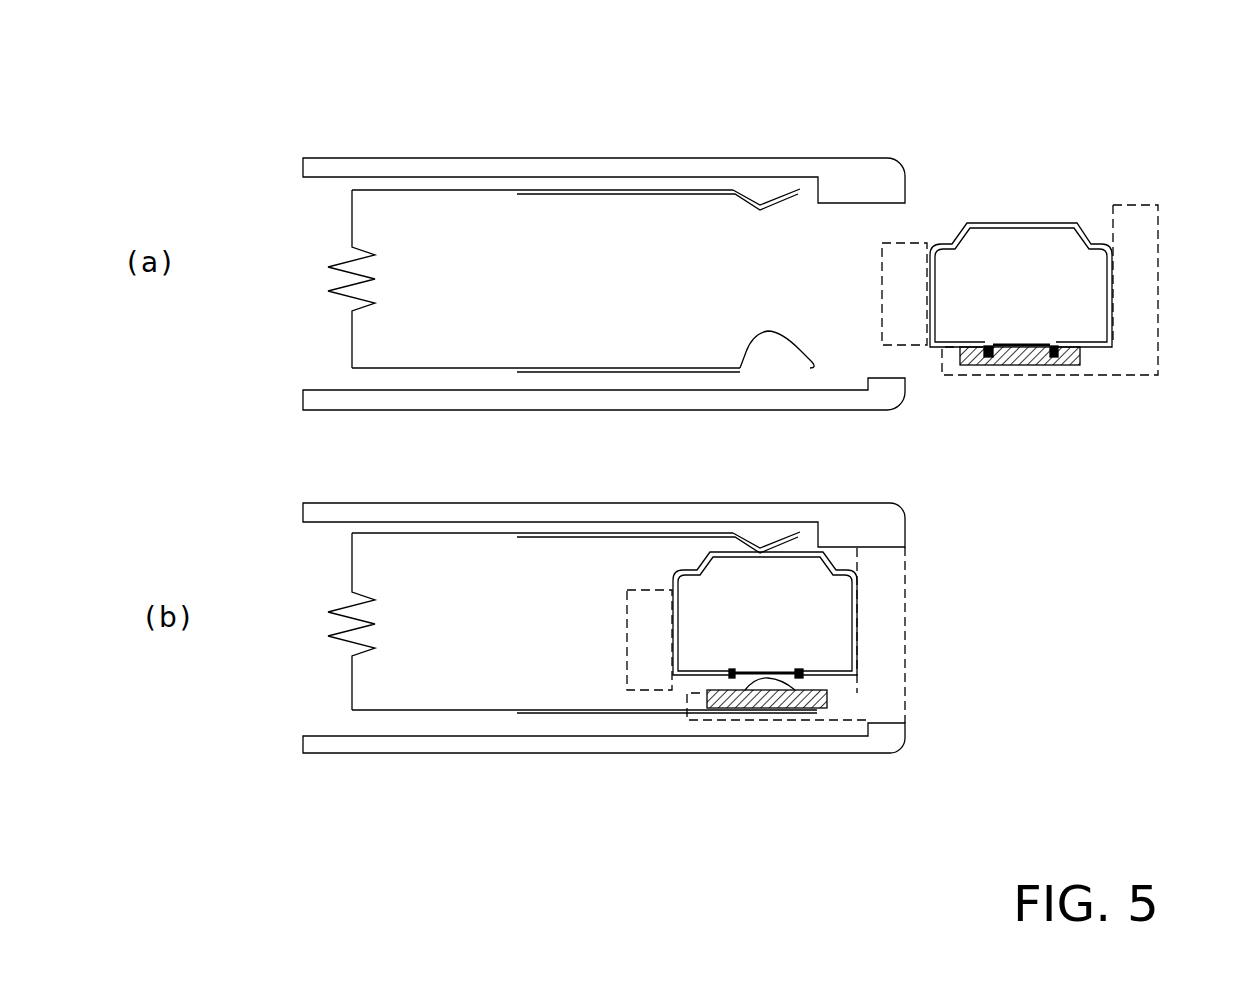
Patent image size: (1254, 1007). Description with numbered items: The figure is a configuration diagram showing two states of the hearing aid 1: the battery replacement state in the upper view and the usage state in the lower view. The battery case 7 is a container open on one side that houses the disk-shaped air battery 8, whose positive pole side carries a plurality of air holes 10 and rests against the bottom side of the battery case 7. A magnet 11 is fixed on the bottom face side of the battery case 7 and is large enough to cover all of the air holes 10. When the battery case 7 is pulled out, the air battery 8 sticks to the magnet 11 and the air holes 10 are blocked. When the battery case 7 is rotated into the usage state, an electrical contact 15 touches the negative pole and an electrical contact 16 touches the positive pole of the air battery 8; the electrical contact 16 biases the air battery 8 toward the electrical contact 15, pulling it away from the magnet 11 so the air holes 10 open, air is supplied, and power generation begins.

The hearing aid 1 is at (650, 158).
The battery case 7 is at (1161, 246).
The air battery 8 is at (1048, 221).
The air holes 10 is at (1000, 360).
The magnet 11 is at (1075, 364).
The electrical contact 15 is at (765, 203).
The electrical contact 16 is at (782, 358).